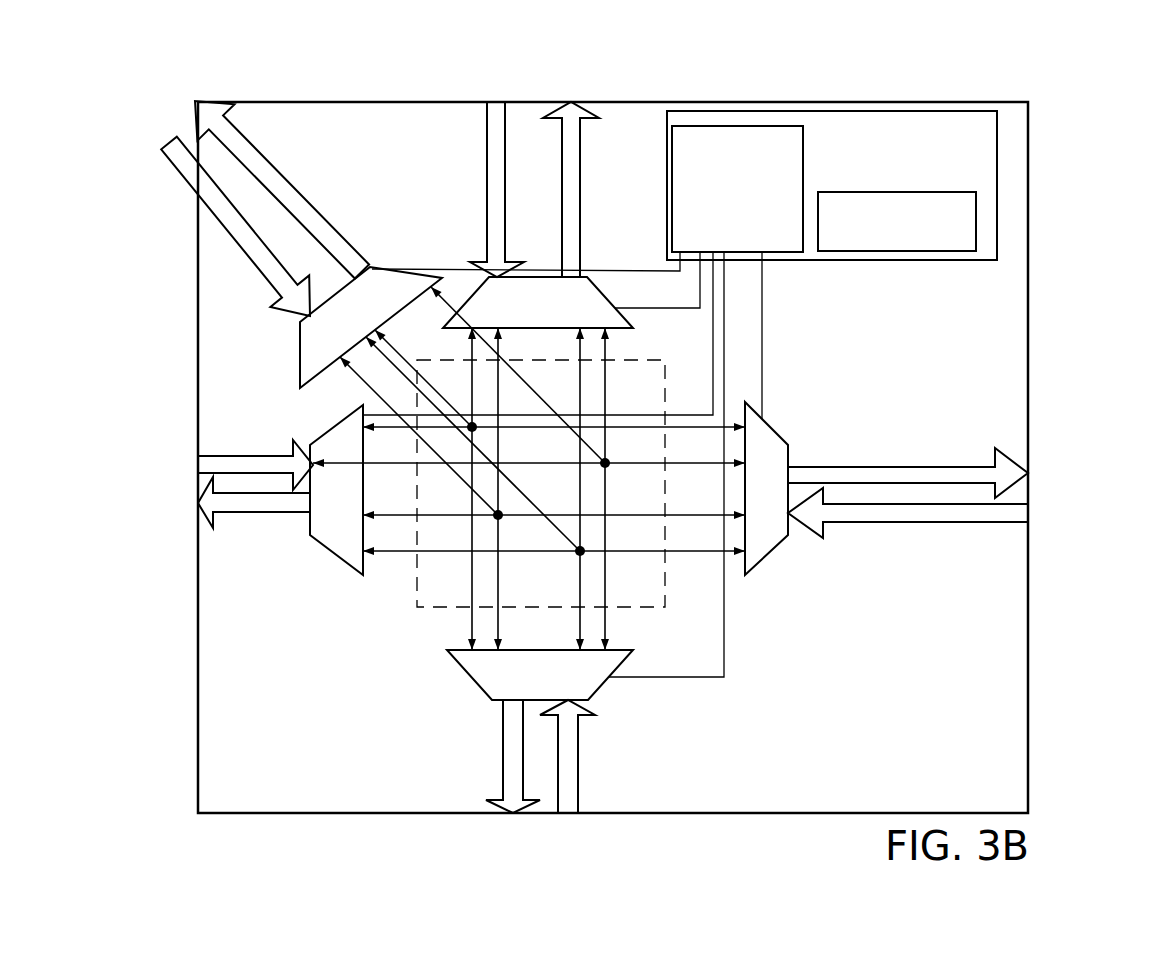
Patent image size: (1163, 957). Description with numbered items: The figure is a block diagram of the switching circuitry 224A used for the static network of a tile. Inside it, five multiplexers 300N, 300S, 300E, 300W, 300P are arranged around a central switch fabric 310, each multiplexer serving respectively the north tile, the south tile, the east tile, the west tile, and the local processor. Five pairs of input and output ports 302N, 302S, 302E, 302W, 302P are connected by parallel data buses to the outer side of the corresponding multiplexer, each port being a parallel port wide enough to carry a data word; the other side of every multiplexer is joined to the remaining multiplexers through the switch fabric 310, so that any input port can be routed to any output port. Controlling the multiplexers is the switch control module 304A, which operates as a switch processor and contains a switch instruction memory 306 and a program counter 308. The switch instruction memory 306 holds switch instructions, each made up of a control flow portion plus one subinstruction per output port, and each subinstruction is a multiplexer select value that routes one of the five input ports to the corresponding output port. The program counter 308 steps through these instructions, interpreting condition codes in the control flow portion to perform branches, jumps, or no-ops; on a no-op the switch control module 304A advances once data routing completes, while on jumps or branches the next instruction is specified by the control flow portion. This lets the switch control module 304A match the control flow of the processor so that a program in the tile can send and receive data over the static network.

The switching circuitry 224A is at (770, 102).
The switch control module 304A is at (772, 262).
The switch instruction memory 306 is at (717, 156).
The program counter 308 is at (945, 192).
The switch fabric 310 is at (630, 358).
The multiplexer 300N is at (513, 315).
The multiplexer 300S is at (517, 689).
The multiplexer 300W is at (330, 537).
The multiplexer 300E is at (780, 435).
The multiplexer 300P is at (332, 317).
The pair of input and output ports 302N is at (478, 98).
The pair of input and output ports 302S is at (478, 826).
The pair of input and output ports 302W is at (168, 433).
The pair of input and output ports 302E is at (1060, 440).
The pair of input and output ports 302P is at (244, 192).